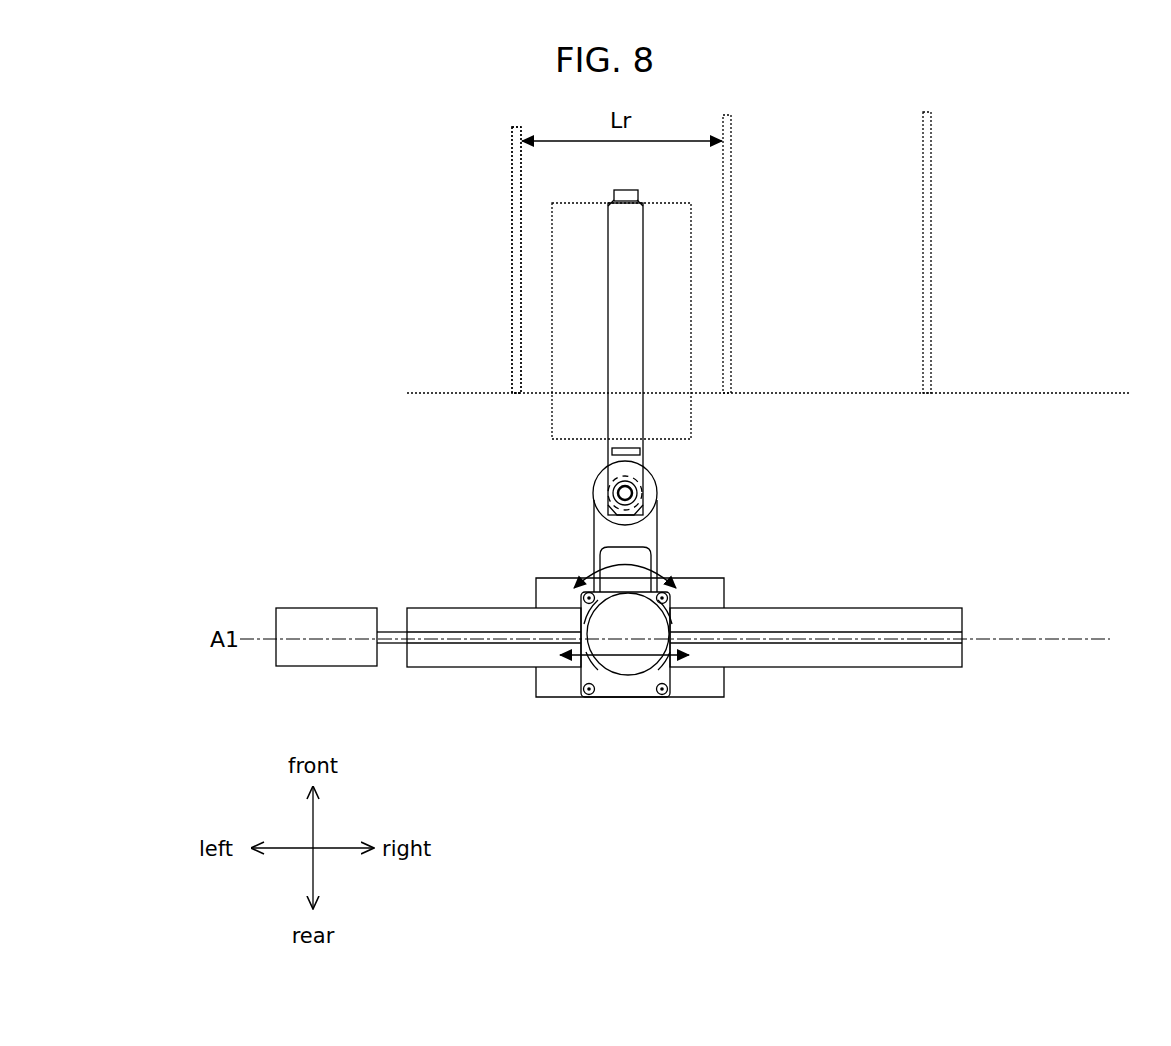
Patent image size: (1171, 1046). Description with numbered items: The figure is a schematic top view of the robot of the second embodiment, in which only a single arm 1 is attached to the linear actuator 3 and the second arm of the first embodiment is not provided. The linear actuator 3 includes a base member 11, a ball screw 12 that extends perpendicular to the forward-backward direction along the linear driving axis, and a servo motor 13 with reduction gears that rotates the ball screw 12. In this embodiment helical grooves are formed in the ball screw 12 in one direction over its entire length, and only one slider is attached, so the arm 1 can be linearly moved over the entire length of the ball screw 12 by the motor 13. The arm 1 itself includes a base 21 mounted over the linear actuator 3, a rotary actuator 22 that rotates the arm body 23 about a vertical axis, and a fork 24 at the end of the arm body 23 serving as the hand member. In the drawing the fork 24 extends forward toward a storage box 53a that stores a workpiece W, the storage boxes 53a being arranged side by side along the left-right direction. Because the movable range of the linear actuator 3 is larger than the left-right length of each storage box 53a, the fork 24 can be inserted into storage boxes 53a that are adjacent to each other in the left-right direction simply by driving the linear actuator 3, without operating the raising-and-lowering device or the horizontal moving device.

The arm 1 is at (577, 481).
The linear actuator 3 is at (492, 679).
The base member 11 is at (559, 663).
The ball screw 12 is at (785, 660).
The servo motor 13 is at (340, 622).
The base 21 is at (632, 685).
The rotary actuator 22 is at (657, 622).
The arm body 23 is at (597, 511).
The fork 24 is at (640, 452).
The storage box 53a is at (528, 393).
The workpiece W is at (693, 414).